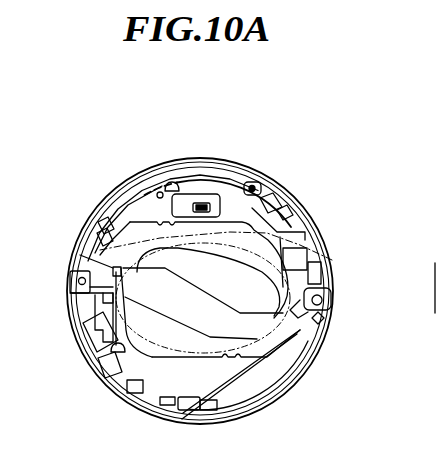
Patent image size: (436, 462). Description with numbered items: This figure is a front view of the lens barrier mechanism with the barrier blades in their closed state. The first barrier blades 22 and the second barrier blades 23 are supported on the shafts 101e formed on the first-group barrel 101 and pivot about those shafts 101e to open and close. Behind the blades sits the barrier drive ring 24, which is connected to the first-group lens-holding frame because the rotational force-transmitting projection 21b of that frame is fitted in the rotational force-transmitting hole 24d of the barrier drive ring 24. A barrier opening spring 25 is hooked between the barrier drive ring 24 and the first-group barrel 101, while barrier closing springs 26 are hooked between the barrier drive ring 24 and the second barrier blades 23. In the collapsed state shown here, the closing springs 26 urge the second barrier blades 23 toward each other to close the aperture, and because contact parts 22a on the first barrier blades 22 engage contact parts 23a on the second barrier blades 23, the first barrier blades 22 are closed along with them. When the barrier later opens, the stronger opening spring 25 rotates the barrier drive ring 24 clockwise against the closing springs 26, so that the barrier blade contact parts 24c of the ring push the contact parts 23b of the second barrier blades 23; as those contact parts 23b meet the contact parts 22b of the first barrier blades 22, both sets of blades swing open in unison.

The first-group barrel 101 is at (281, 190).
The shafts 101e is at (327, 282).
The first barrier blades 22 is at (148, 212).
The contact parts 22a is at (273, 329).
The contact parts 22b is at (152, 227).
The second barrier blades 23 is at (127, 233).
The contact parts 23a is at (318, 322).
The contact parts 23b is at (317, 308).
The barrier drive ring 24 is at (200, 365).
The barrier blade contact parts 24c is at (322, 262).
The rotational force-transmitting hole 24d is at (200, 200).
The rotational force-transmitting projection 21b is at (205, 150).
The barrier opening spring 25 is at (222, 170).
The barrier closing springs 26 is at (306, 237).